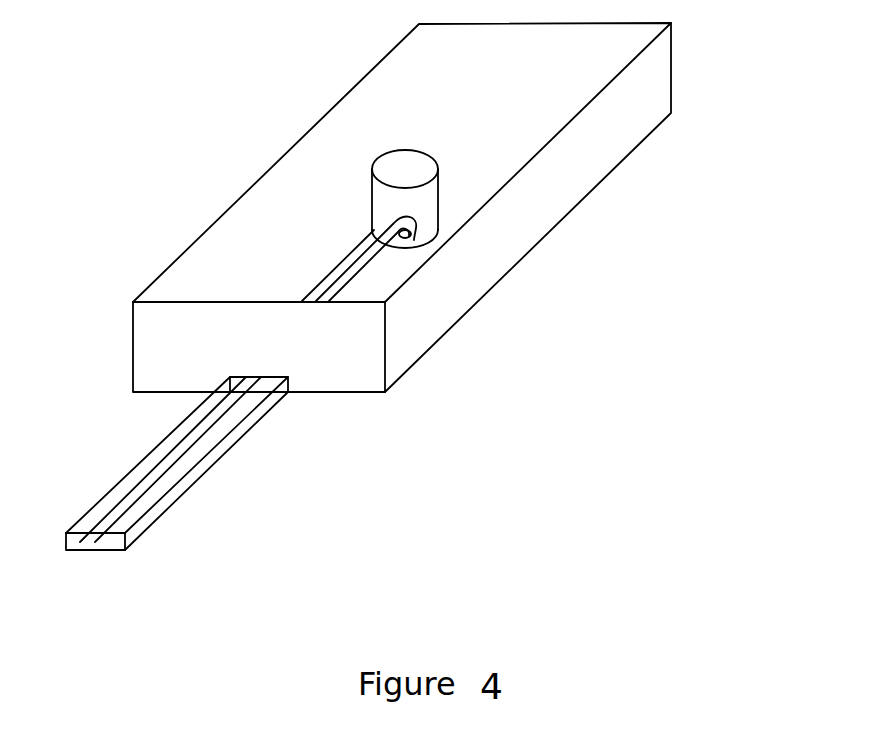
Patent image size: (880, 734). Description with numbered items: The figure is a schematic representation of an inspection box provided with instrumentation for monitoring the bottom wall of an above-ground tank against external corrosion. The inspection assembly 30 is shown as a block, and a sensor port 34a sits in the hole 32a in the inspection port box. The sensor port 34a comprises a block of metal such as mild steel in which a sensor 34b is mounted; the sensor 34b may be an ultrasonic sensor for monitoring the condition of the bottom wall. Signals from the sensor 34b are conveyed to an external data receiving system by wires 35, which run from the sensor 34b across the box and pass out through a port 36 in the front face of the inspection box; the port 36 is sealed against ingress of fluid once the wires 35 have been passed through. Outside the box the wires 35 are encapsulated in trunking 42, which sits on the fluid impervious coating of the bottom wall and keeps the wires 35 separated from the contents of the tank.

The inspection assembly 30 is at (660, 92).
The sensor port 34a is at (438, 190).
The sensor 34b is at (405, 233).
The hole 32a is at (437, 233).
The port 36 is at (233, 380).
The wires 35 is at (198, 455).
The trunking 42 is at (137, 475).